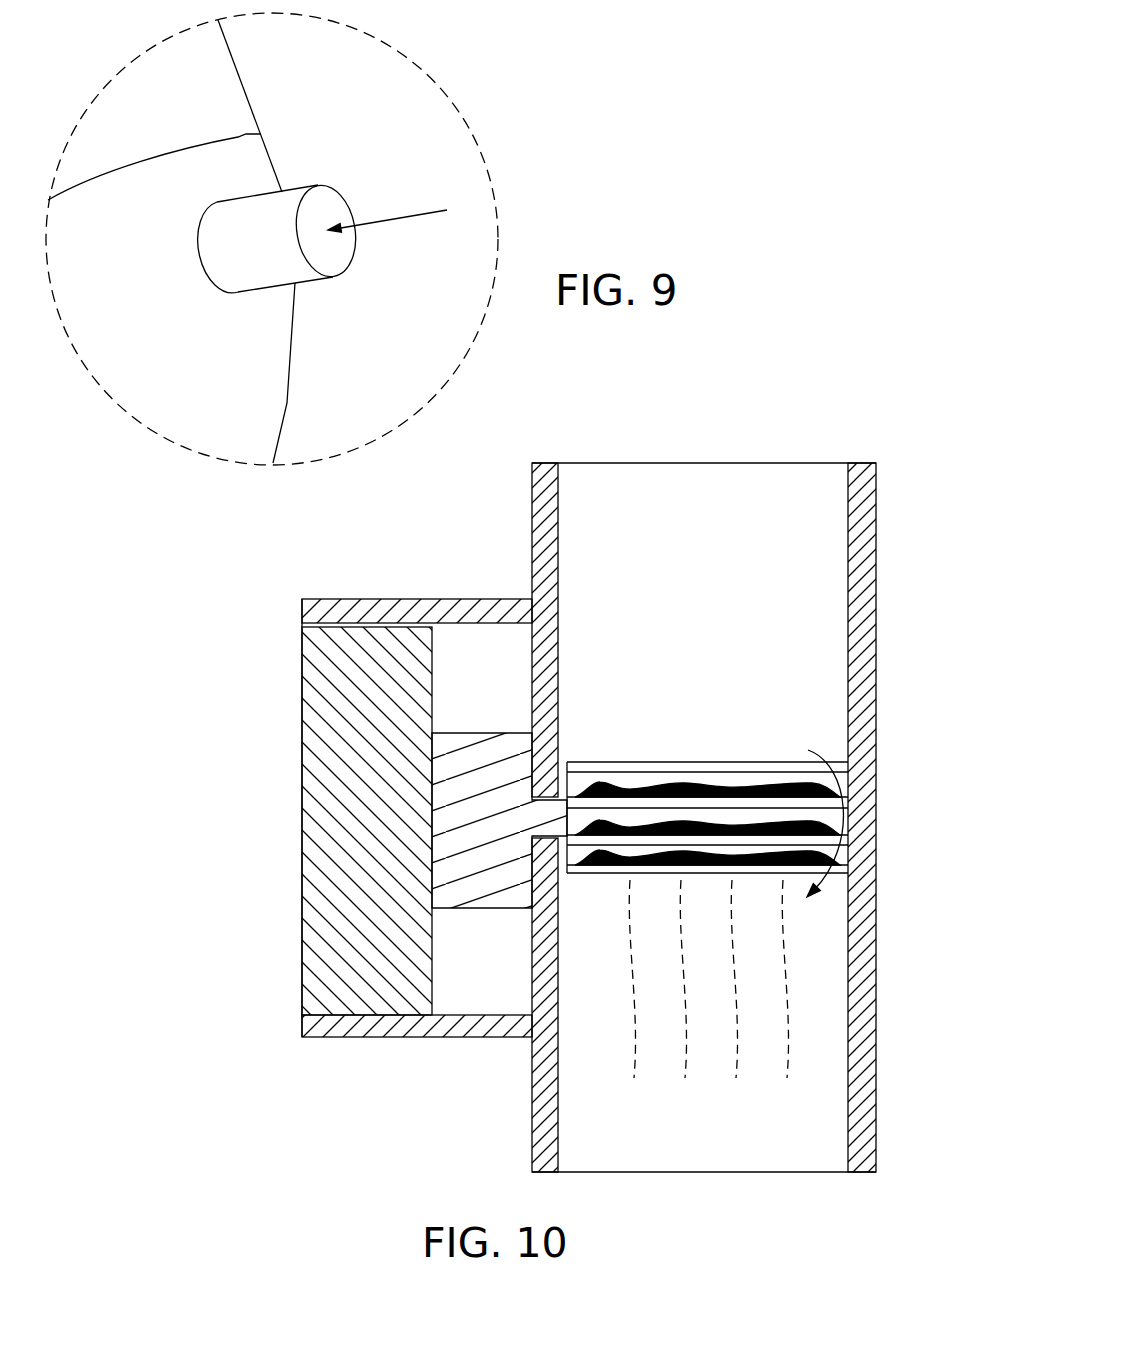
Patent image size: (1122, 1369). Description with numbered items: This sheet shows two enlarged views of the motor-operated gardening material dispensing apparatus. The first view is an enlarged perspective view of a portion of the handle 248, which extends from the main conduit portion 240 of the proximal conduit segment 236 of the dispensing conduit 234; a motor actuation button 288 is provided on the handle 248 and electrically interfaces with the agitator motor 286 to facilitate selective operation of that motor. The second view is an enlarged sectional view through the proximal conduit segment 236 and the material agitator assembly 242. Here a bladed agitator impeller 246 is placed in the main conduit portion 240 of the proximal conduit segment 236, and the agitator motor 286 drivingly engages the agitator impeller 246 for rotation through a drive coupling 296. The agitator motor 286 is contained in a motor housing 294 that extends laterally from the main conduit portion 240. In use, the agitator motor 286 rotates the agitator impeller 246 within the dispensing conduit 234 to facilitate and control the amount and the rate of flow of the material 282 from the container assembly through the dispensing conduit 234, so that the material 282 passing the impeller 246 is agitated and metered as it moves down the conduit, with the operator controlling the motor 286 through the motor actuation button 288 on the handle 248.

In FIG. 10, the dispensing conduit 234 is at (748, 797).
In FIG. 10, the proximal conduit segment 236 is at (906, 817).
In FIG. 10, the main conduit portion 240 is at (865, 733).
In FIG. 10, the material agitator assembly 242 is at (391, 786).
In FIG. 10, the agitator impeller 246 is at (745, 767).
In FIG. 9, the handle 248 is at (155, 80).
In FIG. 10, the material 282 is at (617, 785).
In FIG. 10, the agitator motor 286 is at (312, 690).
In FIG. 9, the motor actuation button 288 is at (245, 270).
In FIG. 10, the motor housing 294 is at (447, 598).
In FIG. 10, the drive coupling 296 is at (500, 736).